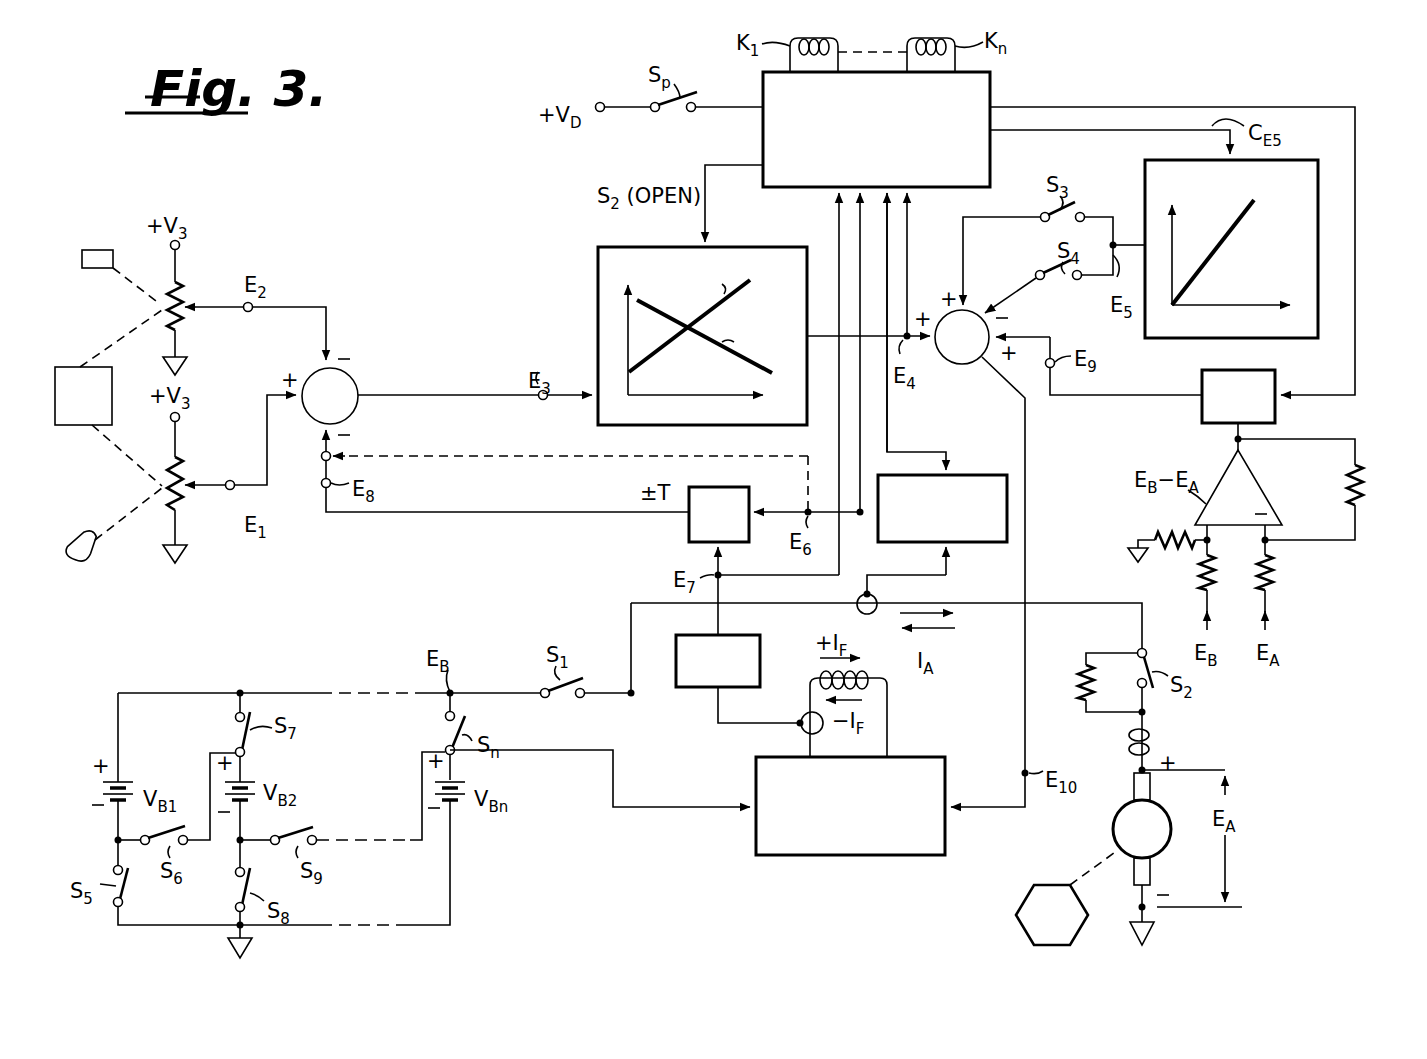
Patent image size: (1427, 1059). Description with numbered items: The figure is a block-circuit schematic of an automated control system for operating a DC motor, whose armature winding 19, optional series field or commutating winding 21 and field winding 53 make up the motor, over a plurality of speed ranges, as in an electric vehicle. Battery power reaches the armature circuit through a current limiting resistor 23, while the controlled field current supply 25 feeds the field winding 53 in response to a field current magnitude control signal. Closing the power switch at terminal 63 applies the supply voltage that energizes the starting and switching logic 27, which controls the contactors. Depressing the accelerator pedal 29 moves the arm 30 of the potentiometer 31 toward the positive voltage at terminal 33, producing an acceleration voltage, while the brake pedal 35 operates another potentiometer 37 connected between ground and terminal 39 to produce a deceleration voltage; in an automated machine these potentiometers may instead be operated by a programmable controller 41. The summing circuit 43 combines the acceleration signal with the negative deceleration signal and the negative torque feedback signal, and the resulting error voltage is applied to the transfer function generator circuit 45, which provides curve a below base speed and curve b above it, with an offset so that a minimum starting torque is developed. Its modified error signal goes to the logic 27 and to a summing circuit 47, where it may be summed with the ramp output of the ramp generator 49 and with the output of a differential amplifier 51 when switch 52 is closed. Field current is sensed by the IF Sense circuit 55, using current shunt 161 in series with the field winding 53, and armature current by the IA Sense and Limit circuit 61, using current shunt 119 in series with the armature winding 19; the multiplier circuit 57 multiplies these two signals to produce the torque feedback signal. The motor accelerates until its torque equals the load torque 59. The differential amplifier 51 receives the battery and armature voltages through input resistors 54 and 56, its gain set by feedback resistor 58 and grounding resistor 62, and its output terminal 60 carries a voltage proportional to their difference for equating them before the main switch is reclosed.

The armature winding 19 is at (1166, 808).
The series field winding and/or commutating winding 21 is at (1130, 744).
The current limiting resistor 23 is at (1080, 676).
The controlled field current supply 25 is at (925, 757).
The starting and switching logic 27 is at (990, 78).
The accelerator pedal 29 is at (94, 566).
The arm 30 is at (221, 484).
The potentiometer 31 is at (183, 512).
The terminal 33 is at (180, 417).
The brake pedal 35 is at (96, 248).
The potentiometer 37 is at (190, 302).
The terminal 39 is at (180, 245).
The programmable controller 41 is at (71, 367).
The summing circuit 43 is at (352, 380).
The transfer function generator circuit 45 is at (733, 246).
The summing circuit 47 is at (973, 310).
The ramp generator 49 is at (1296, 160).
The differential amplifier 51 is at (1255, 478).
The switch 52 is at (1276, 376).
The field winding 53 is at (888, 680).
The input resistor 54 is at (1196, 572).
The IF Sense circuit 55 is at (760, 648).
The input resistor 56 is at (1274, 572).
The multiplier circuit 57 is at (749, 493).
The feedback resistor 58 is at (1362, 478).
The load torque 59 is at (1052, 884).
The output terminal 60 is at (1234, 440).
The IA Sense and Limit circuit 61 is at (978, 473).
The grounding resistor 62 is at (1156, 538).
The supply voltage terminal 63 is at (602, 112).
The current shunt 119 is at (857, 600).
The current shunt 161 is at (802, 720).